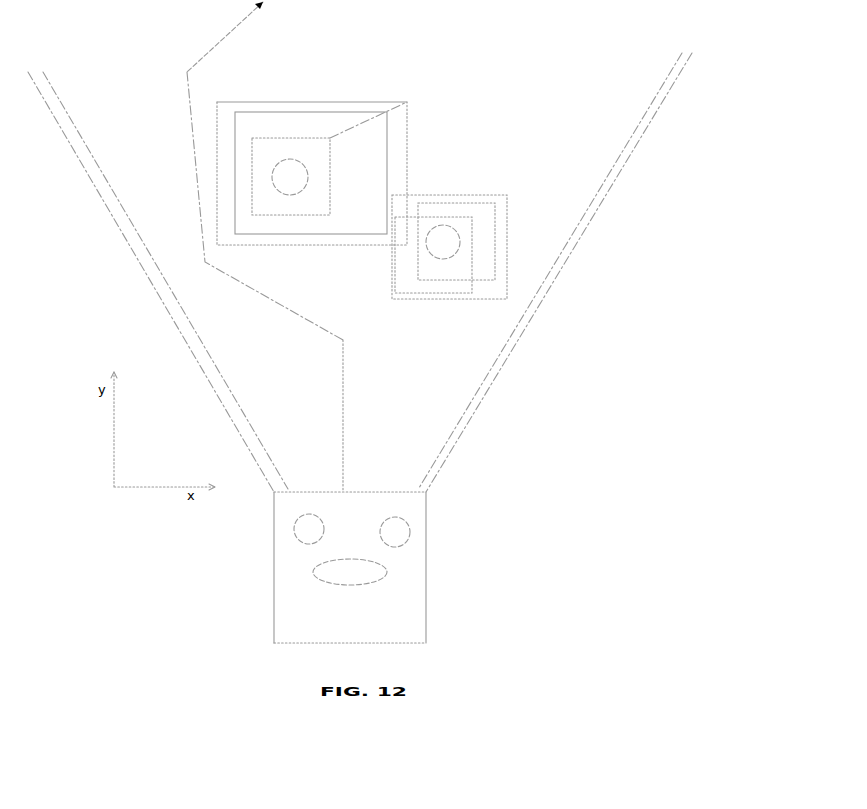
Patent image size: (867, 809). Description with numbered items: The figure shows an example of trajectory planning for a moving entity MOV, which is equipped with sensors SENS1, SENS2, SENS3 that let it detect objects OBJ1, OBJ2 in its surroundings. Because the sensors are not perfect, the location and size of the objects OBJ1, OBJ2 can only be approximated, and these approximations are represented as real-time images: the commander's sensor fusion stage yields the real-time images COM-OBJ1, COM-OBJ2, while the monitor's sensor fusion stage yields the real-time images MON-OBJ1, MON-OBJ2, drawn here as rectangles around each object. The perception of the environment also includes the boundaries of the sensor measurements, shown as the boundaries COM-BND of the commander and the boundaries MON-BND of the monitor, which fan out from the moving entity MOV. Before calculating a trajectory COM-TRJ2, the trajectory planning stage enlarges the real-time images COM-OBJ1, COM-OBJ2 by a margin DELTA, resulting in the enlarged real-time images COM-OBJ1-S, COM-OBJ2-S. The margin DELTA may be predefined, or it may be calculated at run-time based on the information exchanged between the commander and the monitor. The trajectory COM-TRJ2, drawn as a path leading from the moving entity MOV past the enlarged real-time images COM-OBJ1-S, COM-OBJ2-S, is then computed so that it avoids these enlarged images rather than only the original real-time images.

The trajectory COM-TRJ2 is at (230, 33).
The boundaries of sensor measurements of the monitor MON-BND is at (70, 112).
The boundaries of sensor measurements of the commander COM-BND is at (158, 295).
The enlarged real-time image of the first object COM-OBJ1-S is at (407, 102).
The real-time image of the first object of the monitor MON-OBJ1 is at (387, 146).
The real-time image of the first object COM-OBJ1 is at (280, 138).
The margin DELTA is at (347, 128).
The first object OBJ1 is at (308, 178).
The enlarged real-time image of the second object COM-OBJ2-S is at (440, 195).
The real-time image of the second object of the monitor MON-OBJ2 is at (495, 215).
The real-time image of the second object COM-OBJ2 is at (467, 295).
The second object OBJ2 is at (443, 259).
The moving entity MOV is at (426, 562).
The first sensor SENS1 is at (294, 535).
The second sensor SENS2 is at (411, 530).
The third sensor SENS3 is at (313, 576).